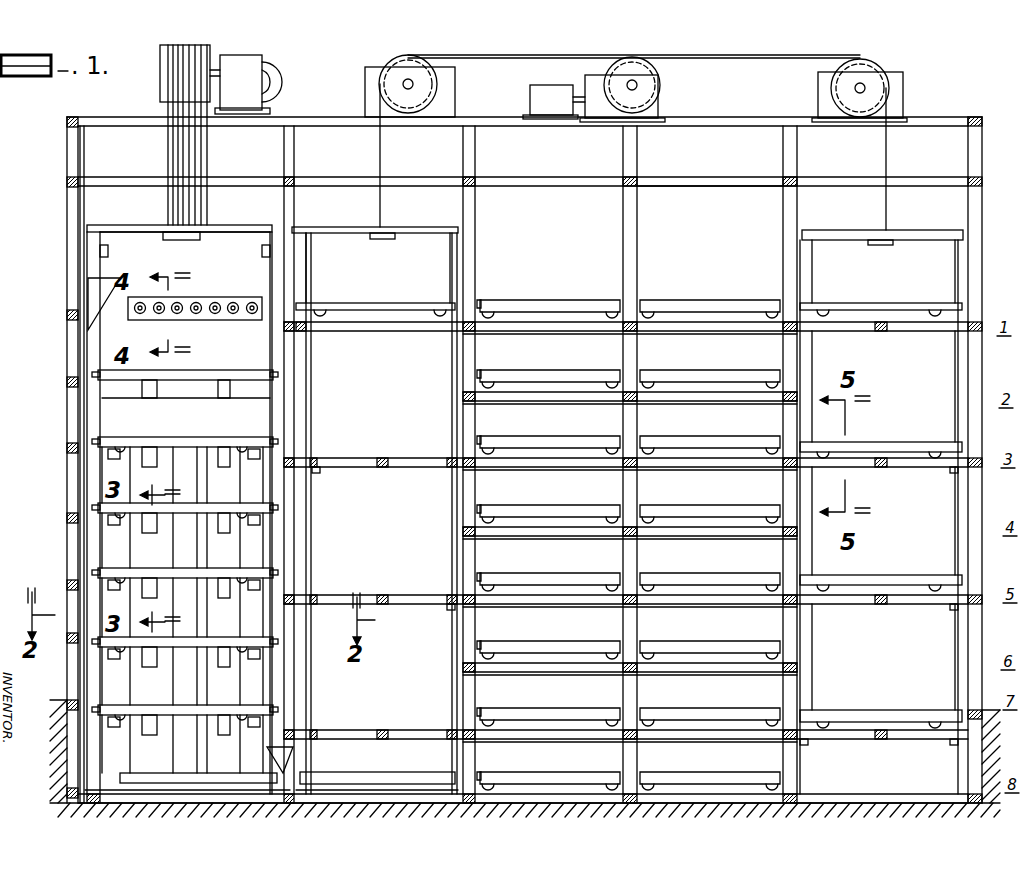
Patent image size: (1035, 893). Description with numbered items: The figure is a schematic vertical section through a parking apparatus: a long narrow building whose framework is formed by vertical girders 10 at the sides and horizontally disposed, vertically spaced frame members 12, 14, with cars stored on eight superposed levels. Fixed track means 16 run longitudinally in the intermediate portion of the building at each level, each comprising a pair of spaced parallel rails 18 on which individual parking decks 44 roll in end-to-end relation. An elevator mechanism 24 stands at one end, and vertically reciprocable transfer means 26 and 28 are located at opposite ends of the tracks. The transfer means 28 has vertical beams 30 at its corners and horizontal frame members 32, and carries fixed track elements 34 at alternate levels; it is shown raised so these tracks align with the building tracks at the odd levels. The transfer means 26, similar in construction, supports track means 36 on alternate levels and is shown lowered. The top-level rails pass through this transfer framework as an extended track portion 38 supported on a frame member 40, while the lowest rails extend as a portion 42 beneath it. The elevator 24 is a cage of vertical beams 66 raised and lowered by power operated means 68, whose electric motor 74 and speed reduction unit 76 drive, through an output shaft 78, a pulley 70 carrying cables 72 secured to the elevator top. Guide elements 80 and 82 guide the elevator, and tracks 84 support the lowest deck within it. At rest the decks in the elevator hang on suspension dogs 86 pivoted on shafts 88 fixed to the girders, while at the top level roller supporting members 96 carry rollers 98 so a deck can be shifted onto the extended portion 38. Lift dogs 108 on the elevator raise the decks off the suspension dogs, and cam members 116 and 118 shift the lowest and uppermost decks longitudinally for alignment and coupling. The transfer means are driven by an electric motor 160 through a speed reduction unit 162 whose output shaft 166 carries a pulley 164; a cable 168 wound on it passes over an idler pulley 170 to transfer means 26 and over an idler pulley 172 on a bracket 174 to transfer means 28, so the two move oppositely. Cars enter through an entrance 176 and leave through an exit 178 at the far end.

The vertical girders 10 is at (67, 206).
The frame members 12 is at (742, 196).
The frame members 14 is at (67, 447).
The track means 16 is at (701, 340).
The rails 18 is at (540, 374).
The elevator mechanism 24 is at (112, 228).
The transfer means 26 is at (466, 270).
The transfer means 28 is at (949, 236).
The vertical beams 30 is at (312, 406).
The frame members 32 is at (316, 468).
The track elements 34 is at (918, 334).
The track means 36 is at (415, 470).
The extended track portion 38 is at (382, 338).
The frame member 40 is at (304, 336).
The extended track portion 42 is at (385, 790).
The parking decks 44 is at (592, 374).
The vertically disposed beams 66 is at (102, 258).
The power operated means 68 is at (270, 71).
The drive pulley 70 is at (160, 85).
The cables 72 is at (196, 158).
The electric motor 74 is at (274, 78).
The speed reduction unit 76 is at (248, 58).
The output shaft 78 is at (218, 70).
The vertical guide elements 80 is at (76, 736).
The vertical guide elements 82 is at (82, 764).
The tracks 84 is at (110, 775).
The suspension dogs 86 is at (222, 398).
The shafts 88 is at (196, 398).
The roller supporting members 96 is at (254, 298).
The rollers 98 is at (200, 298).
The lift dogs 108 is at (108, 525).
The cam members 116 is at (284, 752).
The cam members 118 is at (88, 283).
The electric motor 160 is at (530, 98).
The speed reduction unit 162 is at (590, 75).
The drive pulley 164 is at (662, 92).
The output shaft 166 is at (632, 80).
The cable 168 is at (768, 62).
The idler pulley 170 is at (402, 64).
The idler pulley 172 is at (876, 70).
The bracket 174 is at (900, 98).
The entrance 176 is at (70, 683).
The exit 178 is at (975, 642).